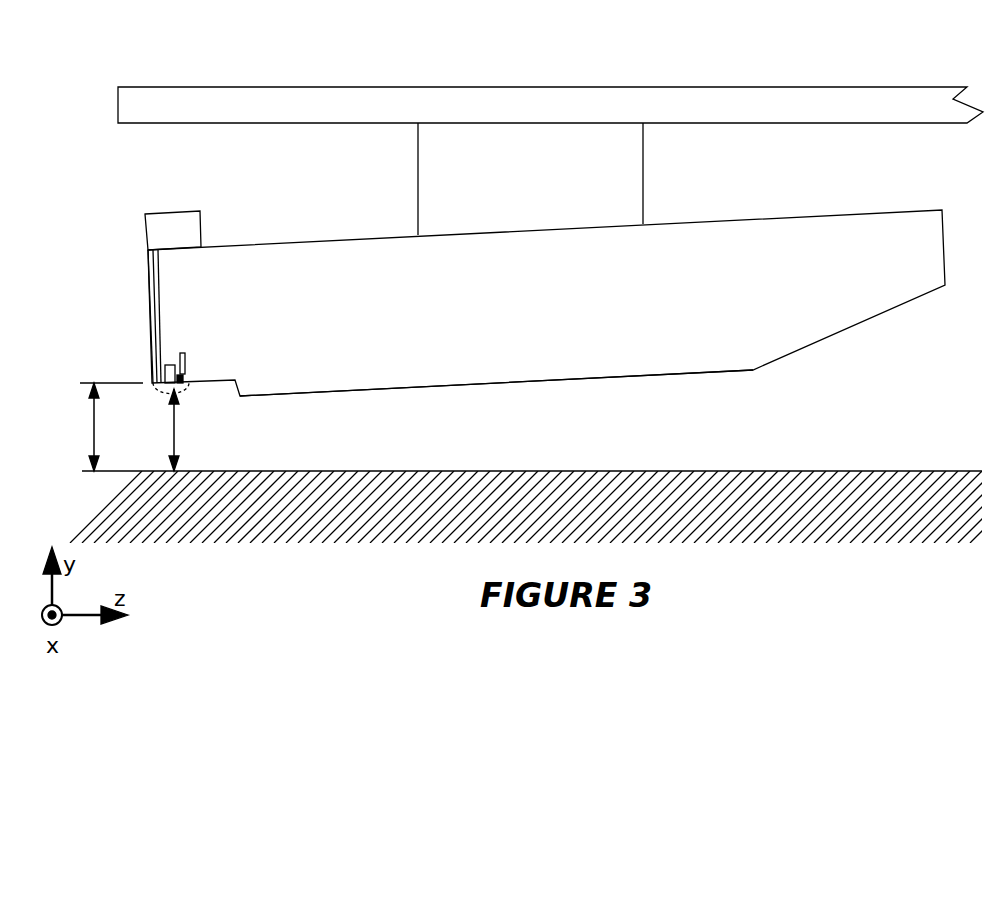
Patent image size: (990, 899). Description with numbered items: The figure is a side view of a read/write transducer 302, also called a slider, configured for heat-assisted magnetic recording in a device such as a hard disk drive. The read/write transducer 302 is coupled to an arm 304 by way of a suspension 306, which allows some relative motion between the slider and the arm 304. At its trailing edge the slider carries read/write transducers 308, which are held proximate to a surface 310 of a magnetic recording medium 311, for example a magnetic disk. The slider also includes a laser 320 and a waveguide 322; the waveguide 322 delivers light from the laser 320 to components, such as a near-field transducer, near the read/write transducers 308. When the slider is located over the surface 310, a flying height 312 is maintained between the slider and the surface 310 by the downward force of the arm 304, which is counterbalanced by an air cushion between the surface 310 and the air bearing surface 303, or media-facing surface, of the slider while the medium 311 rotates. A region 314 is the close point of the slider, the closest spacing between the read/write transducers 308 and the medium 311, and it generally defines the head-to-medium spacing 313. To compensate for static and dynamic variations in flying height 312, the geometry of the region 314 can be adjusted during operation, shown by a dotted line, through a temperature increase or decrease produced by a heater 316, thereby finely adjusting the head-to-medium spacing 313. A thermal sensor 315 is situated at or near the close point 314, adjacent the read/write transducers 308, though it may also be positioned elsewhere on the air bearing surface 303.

The read/write transducer 302 is at (808, 227).
The air bearing surface 303 is at (362, 391).
The arm 304 is at (875, 95).
The suspension 306 is at (643, 170).
The read/write transducers 308 is at (155, 357).
The surface 310 is at (813, 470).
The magnetic recording medium 311 is at (832, 528).
The flying height 312 is at (70, 427).
The head-to-medium spacing 313 is at (152, 430).
The region 314 is at (183, 393).
The thermal sensor 315 is at (184, 377).
The heater 316 is at (181, 354).
The laser 320 is at (173, 222).
The waveguide 322 is at (155, 288).